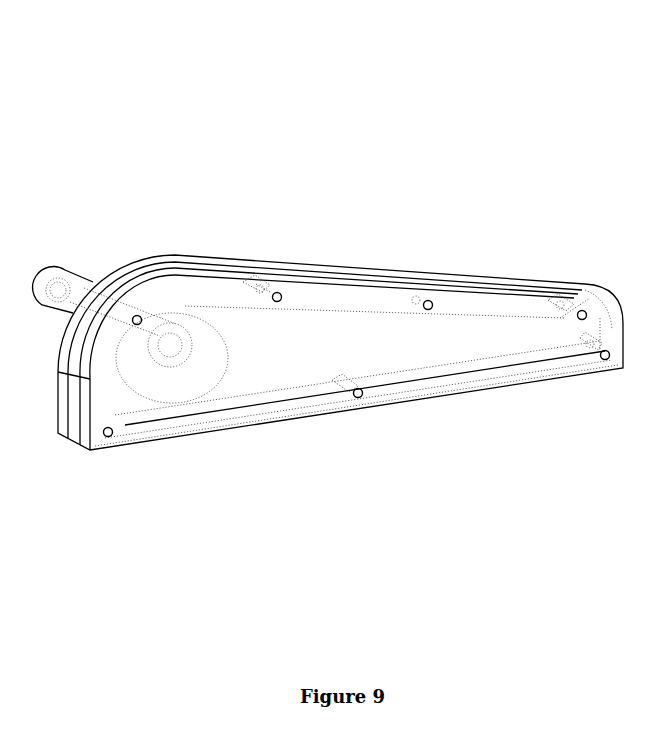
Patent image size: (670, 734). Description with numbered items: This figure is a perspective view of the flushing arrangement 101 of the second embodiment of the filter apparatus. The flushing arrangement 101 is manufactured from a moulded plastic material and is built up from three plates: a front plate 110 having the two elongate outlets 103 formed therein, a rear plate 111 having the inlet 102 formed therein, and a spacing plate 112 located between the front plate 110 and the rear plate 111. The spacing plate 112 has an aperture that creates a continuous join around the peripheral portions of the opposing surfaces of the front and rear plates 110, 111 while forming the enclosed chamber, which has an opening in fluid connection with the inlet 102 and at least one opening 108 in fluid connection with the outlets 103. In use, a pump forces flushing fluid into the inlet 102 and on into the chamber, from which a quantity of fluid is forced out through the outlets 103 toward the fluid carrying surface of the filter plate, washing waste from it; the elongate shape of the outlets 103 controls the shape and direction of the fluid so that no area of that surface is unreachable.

The flushing arrangement 101 is at (450, 86).
The inlet 102 is at (55, 273).
The elongate outlets 103 is at (242, 405).
The opening 108 is at (417, 370).
The front plate 110 is at (157, 278).
The rear plate 111 is at (123, 269).
The spacing plate 112 is at (137, 277).